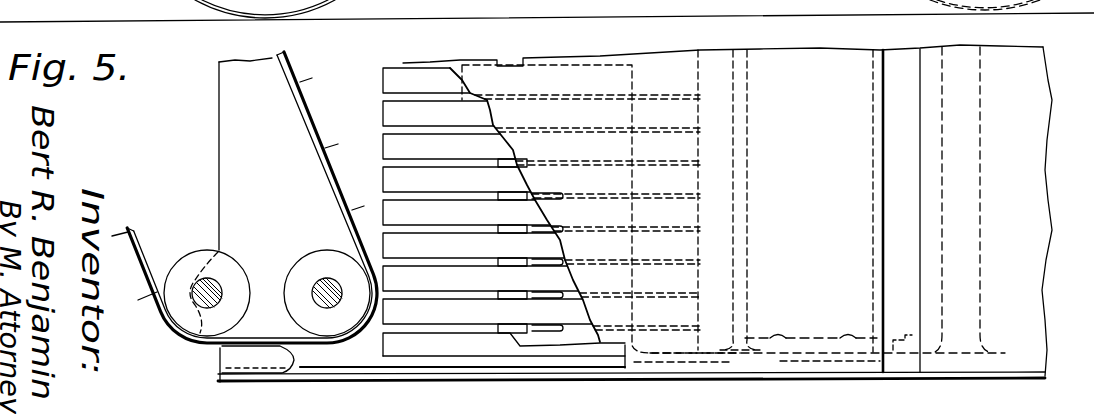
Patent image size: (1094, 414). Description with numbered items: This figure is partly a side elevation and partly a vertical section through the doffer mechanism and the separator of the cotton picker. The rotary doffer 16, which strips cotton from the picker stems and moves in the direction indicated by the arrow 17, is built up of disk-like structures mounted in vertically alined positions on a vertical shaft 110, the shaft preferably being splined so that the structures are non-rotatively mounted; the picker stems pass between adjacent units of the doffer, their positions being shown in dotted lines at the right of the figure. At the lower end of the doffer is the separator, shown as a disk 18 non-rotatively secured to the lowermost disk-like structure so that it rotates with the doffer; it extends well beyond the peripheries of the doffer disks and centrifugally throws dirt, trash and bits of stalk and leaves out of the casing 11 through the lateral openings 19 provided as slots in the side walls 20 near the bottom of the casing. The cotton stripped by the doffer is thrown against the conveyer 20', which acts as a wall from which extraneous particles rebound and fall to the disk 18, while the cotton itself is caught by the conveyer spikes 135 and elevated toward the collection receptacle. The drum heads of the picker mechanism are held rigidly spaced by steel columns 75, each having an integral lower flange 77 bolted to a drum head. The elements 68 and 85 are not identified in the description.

The casing 11 is at (1048, 162).
The rotary doffer 16 is at (383, 80).
The arrow 17 is at (560, 213).
The separator disk 18 is at (338, 342).
The lateral openings 19 is at (618, 340).
The side walls 20 is at (798, 187).
The conveyer 20' is at (148, 250).
The rods 68 is at (718, 58).
The steel column 75 is at (842, 78).
The lower flange 77 is at (800, 347).
The bracket 85 is at (222, 383).
The vertical shaft 110 is at (505, 56).
The conveyer spikes 135 is at (304, 80).